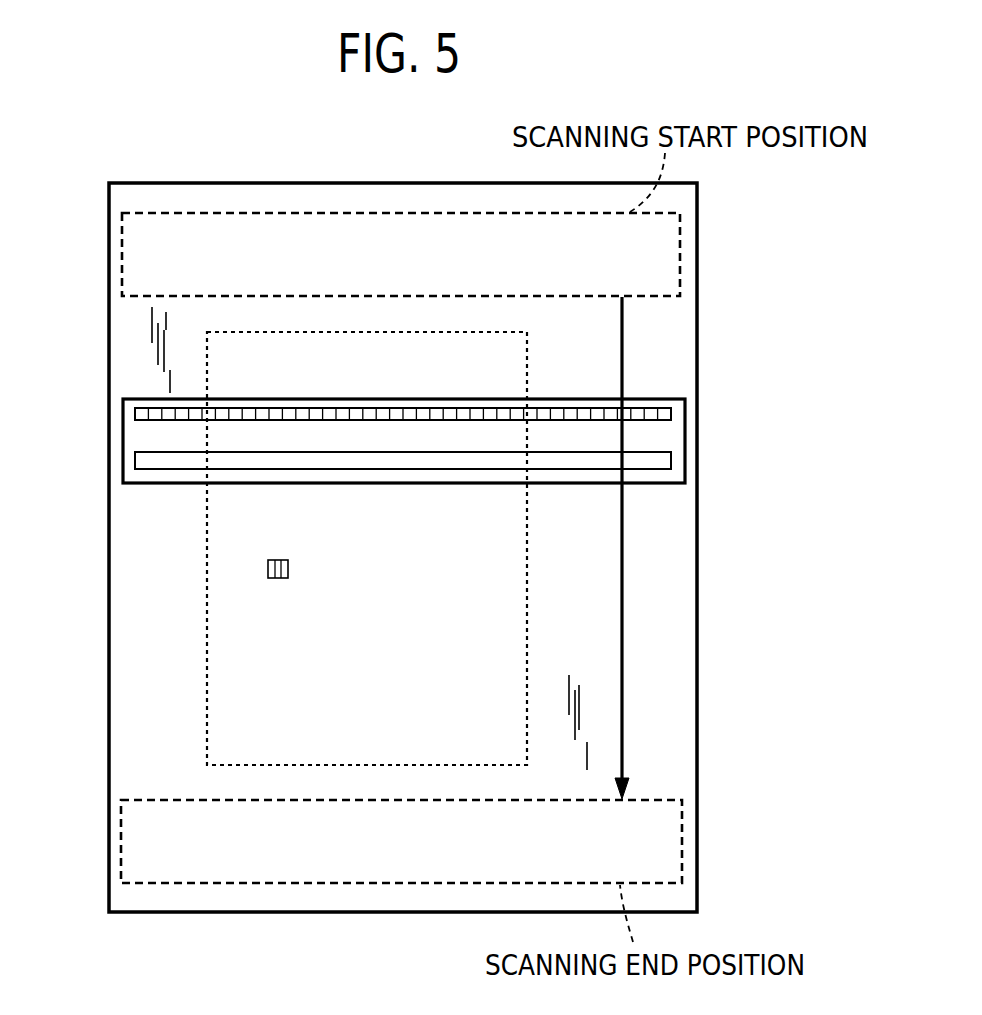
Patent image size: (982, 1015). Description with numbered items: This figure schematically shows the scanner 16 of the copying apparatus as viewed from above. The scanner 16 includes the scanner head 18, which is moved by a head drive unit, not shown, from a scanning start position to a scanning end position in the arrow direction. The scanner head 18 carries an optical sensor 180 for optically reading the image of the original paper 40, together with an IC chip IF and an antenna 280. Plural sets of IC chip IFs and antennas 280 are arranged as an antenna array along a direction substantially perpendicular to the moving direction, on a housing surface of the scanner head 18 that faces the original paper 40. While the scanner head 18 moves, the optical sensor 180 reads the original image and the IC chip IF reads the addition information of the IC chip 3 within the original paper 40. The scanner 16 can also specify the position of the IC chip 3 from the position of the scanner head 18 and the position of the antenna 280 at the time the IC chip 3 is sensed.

The scanner 16 is at (148, 183).
The original paper 40 is at (206, 700).
The scanner head 18 is at (655, 398).
The antenna 280 is at (672, 411).
The optical sensor 180 is at (672, 460).
The IC chip 3 is at (268, 570).